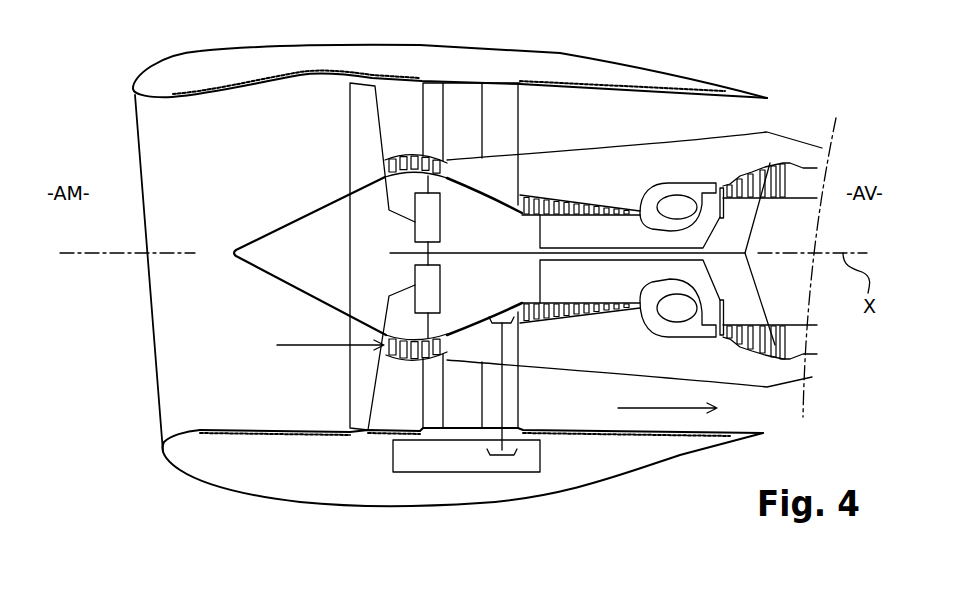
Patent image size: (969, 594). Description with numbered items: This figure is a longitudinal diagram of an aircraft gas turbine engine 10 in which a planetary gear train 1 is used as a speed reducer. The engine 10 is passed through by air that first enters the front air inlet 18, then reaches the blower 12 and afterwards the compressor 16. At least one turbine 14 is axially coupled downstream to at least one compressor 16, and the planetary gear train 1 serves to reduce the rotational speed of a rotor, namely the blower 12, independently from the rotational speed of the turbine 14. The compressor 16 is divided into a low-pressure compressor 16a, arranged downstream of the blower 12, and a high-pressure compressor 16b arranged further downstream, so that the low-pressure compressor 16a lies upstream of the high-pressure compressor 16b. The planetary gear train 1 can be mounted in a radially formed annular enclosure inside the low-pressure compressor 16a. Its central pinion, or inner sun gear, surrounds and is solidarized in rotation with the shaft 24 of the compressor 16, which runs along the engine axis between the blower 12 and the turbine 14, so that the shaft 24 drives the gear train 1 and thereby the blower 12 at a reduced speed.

The planetary gear train 1 is at (450, 287).
The aircraft gas turbine engine 10 is at (662, 48).
The blower 12 is at (350, 118).
The turbine 14 is at (768, 155).
The compressor 16 is at (540, 180).
The low-pressure compressor 16a is at (408, 154).
The high-pressure compressor 16b is at (567, 197).
The front air inlet 18 is at (112, 273).
The shaft of the compressor 24 is at (490, 252).